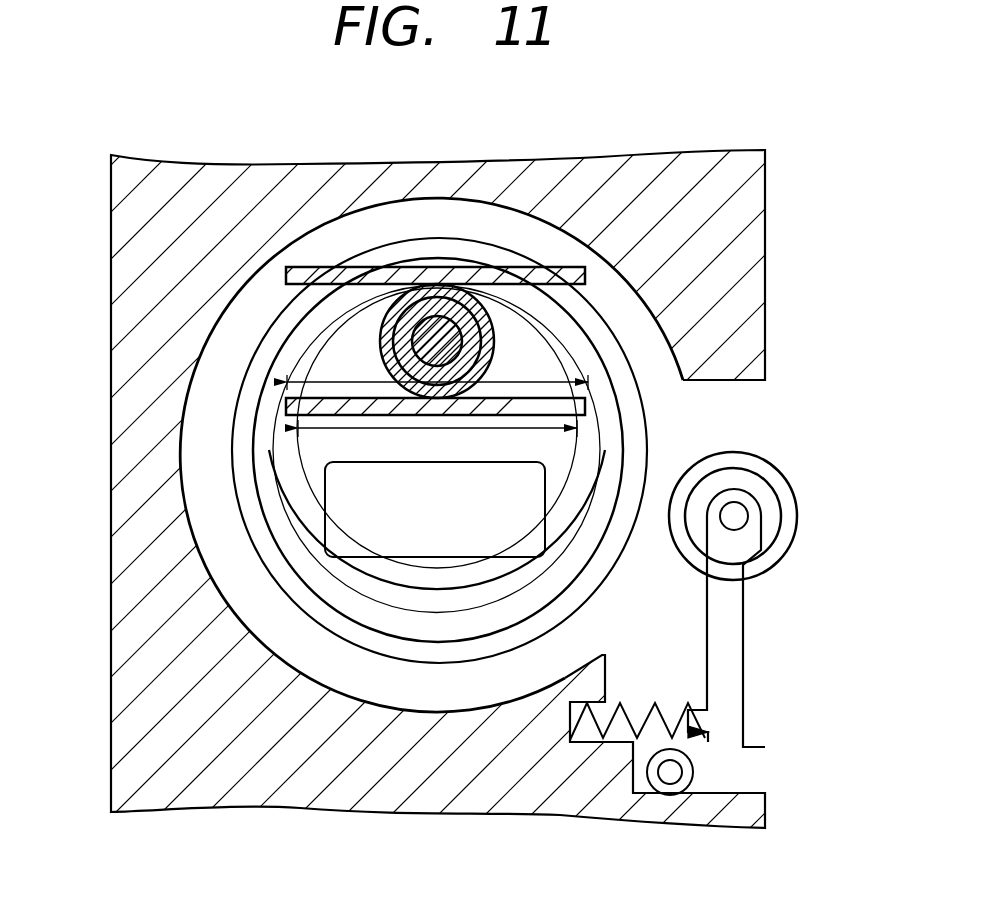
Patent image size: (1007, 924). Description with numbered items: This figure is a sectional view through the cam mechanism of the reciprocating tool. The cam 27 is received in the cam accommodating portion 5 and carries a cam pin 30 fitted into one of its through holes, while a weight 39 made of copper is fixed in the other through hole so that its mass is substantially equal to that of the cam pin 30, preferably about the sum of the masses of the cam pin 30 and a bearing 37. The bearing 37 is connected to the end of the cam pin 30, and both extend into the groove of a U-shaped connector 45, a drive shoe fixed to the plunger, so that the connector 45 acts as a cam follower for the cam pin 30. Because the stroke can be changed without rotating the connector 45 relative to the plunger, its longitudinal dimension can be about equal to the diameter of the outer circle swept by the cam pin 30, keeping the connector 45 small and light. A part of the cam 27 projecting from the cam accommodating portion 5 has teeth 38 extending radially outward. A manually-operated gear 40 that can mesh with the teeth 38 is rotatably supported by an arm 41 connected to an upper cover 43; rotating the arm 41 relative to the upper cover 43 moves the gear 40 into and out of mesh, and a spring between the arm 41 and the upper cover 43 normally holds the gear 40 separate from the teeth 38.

The cam accommodating portion 5 is at (345, 605).
The cam 27 is at (565, 335).
The cam pin 30 is at (435, 328).
The bearing 37 is at (483, 313).
The teeth 38 is at (607, 377).
The weight 39 is at (400, 512).
The manually-operated gear 40 is at (792, 486).
The arm 41 is at (735, 652).
The upper cover 43 is at (200, 200).
The connector 45 is at (378, 274).